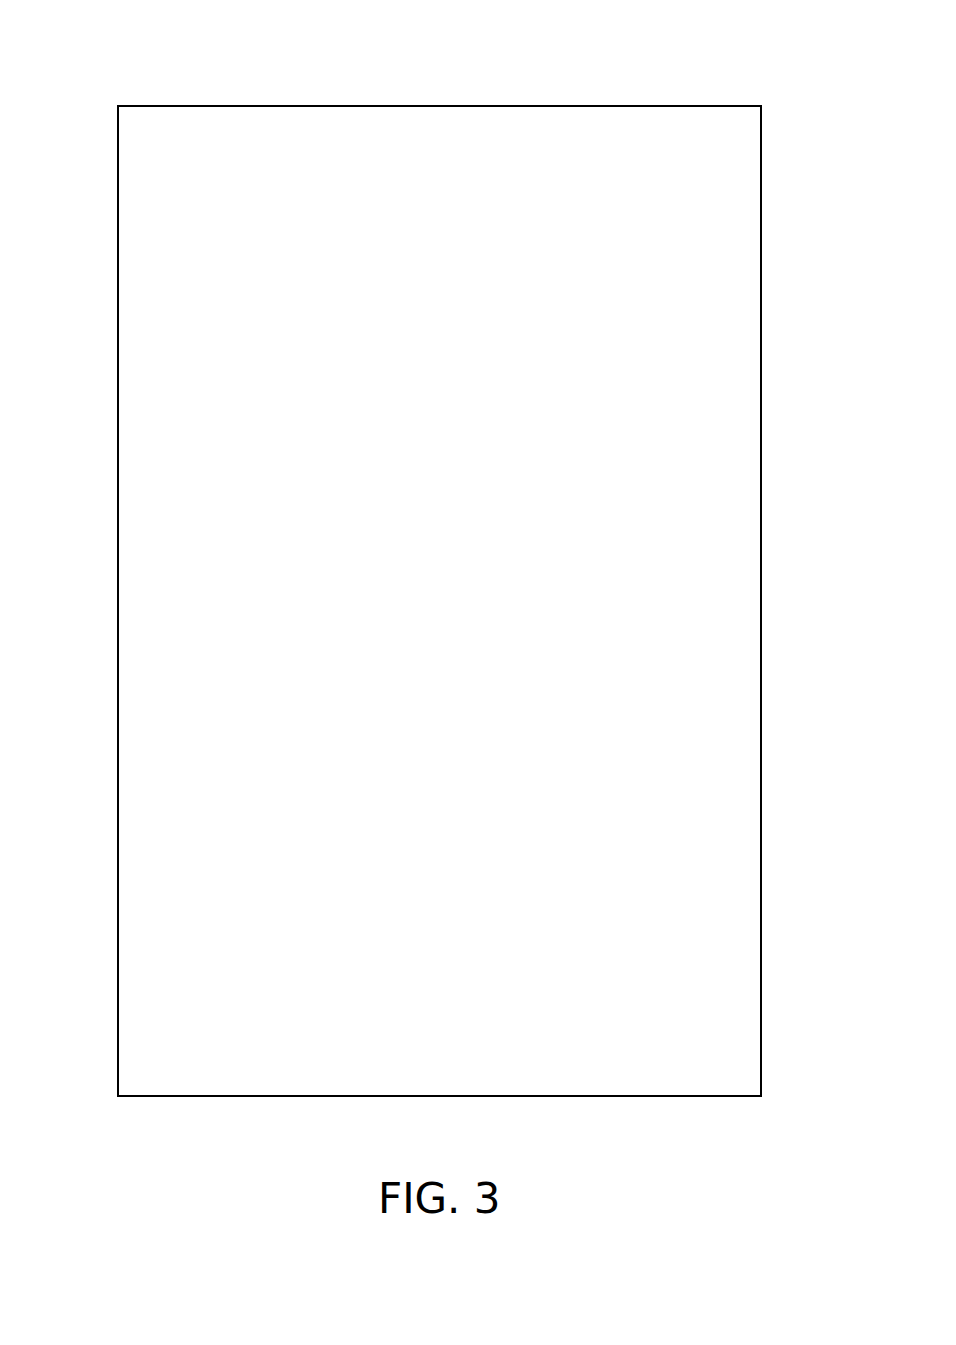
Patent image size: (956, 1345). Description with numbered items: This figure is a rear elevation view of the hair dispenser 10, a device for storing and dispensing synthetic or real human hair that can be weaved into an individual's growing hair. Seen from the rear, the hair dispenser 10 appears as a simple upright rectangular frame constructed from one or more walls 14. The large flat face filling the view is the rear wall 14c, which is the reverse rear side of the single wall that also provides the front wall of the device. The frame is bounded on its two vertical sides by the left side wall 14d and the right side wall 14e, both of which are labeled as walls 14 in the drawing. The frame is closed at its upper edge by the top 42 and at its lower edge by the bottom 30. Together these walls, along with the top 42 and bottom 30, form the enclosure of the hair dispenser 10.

The hair dispenser 10 is at (399, 549).
The walls 14 is at (118, 262).
The rear wall 14c is at (459, 615).
The left side wall 14d is at (761, 620).
The right side wall 14e is at (118, 620).
The top 42 is at (212, 106).
The bottom 30 is at (613, 1097).